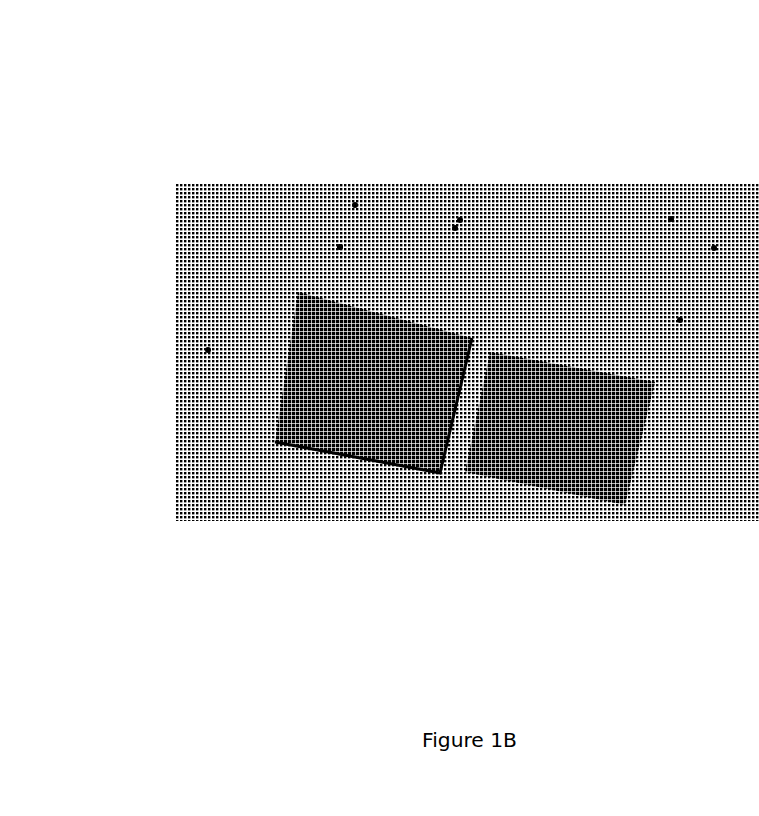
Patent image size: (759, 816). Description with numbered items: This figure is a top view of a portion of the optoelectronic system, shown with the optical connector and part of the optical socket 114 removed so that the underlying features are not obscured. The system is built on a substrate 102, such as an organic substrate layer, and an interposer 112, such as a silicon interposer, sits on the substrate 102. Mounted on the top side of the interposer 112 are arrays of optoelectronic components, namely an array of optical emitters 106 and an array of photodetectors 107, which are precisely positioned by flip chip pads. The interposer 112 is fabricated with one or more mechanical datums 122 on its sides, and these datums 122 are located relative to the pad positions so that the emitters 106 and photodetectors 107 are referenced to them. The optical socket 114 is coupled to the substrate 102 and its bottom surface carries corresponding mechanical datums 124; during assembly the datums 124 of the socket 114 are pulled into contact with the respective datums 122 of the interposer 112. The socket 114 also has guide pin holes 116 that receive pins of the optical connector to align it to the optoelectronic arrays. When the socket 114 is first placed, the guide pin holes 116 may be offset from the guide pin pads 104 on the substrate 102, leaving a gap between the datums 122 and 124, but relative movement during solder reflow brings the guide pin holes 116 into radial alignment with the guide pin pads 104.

The substrate 102 is at (187, 430).
The guide pin pads 104 is at (714, 248).
The optical emitters 106 is at (507, 492).
The photodetectors 107 is at (327, 460).
The interposer 112 is at (295, 472).
The optical socket 114 is at (460, 220).
The guide pin holes 116 is at (671, 219).
The mechanical datums 122 is at (680, 320).
The mechanical datums 124 is at (455, 228).